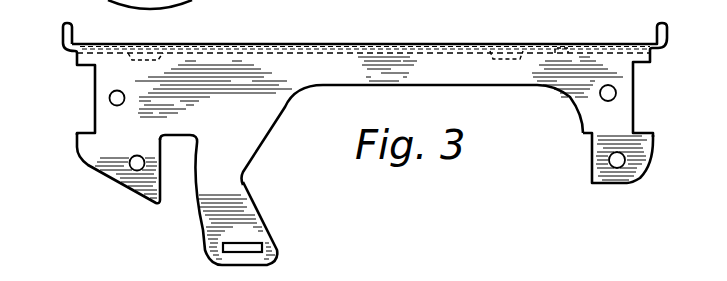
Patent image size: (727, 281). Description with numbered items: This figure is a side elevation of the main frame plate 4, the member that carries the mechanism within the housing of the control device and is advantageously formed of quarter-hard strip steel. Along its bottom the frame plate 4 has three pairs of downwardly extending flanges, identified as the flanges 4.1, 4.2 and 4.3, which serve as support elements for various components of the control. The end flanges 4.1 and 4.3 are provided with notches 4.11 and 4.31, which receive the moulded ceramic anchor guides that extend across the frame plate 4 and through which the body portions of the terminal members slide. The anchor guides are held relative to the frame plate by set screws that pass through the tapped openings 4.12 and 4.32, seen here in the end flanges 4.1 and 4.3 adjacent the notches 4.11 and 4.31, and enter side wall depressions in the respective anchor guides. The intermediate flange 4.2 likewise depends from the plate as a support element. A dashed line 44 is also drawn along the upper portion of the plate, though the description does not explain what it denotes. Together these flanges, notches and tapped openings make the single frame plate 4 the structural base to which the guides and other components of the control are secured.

The main frame plate 4 is at (435, 45).
The fold line 44 is at (373, 52).
The end flange 4.1 is at (611, 185).
The notch 4.11 is at (634, 105).
The tapped opening 4.12 is at (617, 92).
The flange 4.2 is at (249, 223).
The end flange 4.3 is at (134, 198).
The notch 4.31 is at (95, 89).
The tapped opening 4.32 is at (108, 101).